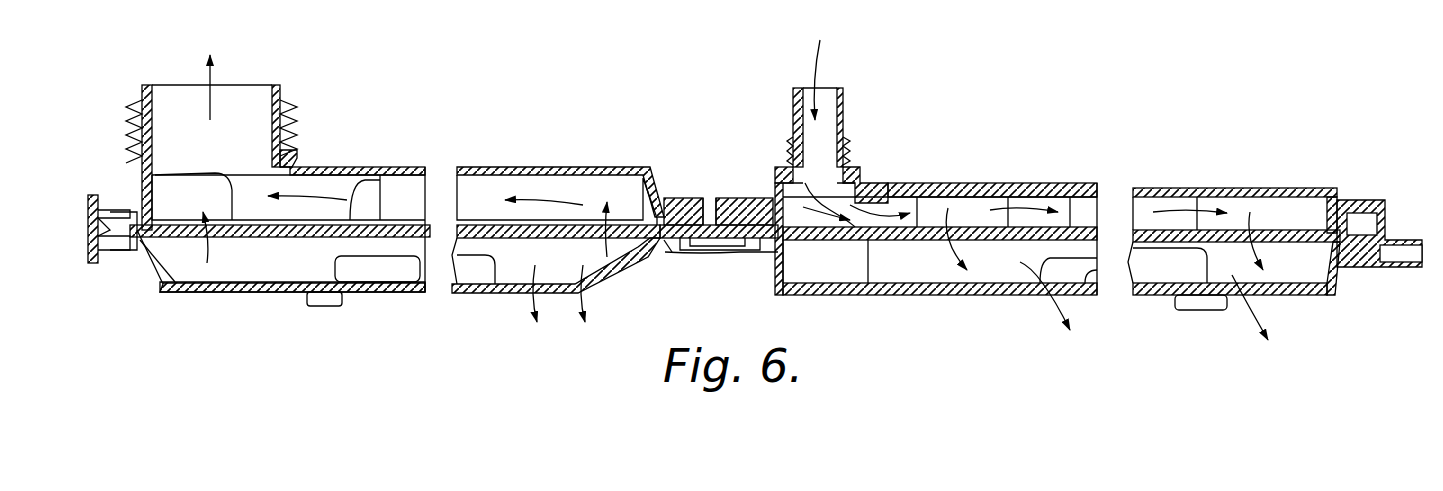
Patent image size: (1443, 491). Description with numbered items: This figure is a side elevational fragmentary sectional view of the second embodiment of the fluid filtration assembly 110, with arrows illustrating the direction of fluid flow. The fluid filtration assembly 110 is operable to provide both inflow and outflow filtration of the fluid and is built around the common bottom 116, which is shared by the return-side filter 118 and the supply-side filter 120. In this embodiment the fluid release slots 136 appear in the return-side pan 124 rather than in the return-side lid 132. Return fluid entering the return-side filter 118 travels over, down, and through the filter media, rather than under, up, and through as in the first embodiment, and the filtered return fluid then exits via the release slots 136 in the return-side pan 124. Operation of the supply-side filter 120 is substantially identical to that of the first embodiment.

The fluid filtration assembly 110 is at (1237, 115).
The common bottom 116 is at (723, 250).
The return-side filter 118 is at (773, 88).
The supply-side filter 120 is at (565, 146).
The return-side pan 124 is at (892, 291).
The return-side lid 132 is at (1227, 188).
The fluid release slots 136 is at (1027, 300).